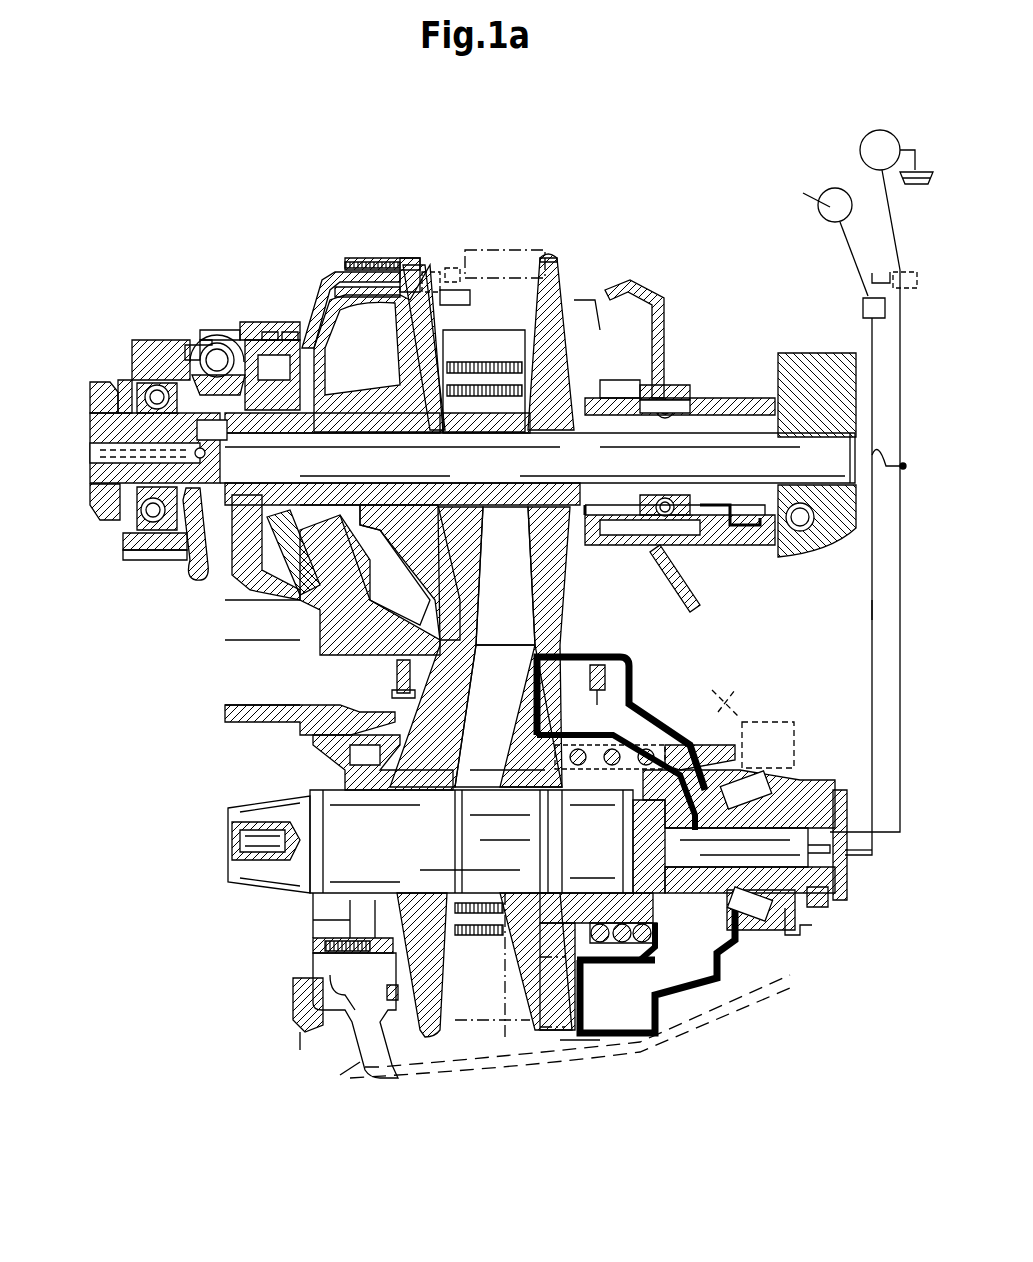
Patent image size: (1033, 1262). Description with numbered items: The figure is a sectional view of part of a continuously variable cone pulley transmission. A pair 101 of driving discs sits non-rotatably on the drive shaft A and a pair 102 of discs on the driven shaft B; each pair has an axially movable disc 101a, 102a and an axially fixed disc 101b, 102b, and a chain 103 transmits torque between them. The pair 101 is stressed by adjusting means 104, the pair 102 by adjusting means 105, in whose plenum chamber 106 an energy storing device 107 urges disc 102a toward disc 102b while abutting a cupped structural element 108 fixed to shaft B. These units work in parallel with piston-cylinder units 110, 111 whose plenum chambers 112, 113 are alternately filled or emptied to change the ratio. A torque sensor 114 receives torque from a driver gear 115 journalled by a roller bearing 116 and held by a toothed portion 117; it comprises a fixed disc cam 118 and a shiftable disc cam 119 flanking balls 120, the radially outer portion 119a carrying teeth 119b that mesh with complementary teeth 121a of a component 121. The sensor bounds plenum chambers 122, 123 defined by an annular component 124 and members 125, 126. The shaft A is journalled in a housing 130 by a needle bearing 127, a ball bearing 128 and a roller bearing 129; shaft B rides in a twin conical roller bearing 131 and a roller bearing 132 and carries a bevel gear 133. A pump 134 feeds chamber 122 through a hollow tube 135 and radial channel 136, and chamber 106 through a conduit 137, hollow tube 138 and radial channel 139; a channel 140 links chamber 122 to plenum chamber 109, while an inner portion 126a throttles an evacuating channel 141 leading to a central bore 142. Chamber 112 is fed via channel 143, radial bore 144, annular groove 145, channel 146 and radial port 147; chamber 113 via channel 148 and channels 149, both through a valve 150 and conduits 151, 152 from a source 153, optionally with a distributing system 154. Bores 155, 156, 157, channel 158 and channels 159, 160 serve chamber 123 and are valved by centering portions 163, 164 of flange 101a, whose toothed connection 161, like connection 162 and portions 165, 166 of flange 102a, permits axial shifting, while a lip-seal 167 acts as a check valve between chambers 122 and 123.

The pair of driving discs 101 is at (485, 625).
The axially movable disc 101a is at (415, 262).
The axially fixed disc 101b is at (550, 262).
The pair of discs 102 is at (490, 1050).
The axially movable disc 102a is at (563, 1040).
The axially fixed disc 102b is at (420, 1047).
The chain or belt 103 is at (463, 915).
The adjusting means 104 is at (327, 640).
The adjusting means 105 is at (623, 727).
The plenum chamber 106 is at (690, 745).
The energy storing device 107 is at (660, 730).
The cupped structural element 108 is at (658, 973).
The plenum chamber 109 is at (407, 653).
The piston-cylinder unit 110 is at (360, 258).
The piston-cylinder unit 111 is at (613, 653).
The plenum chamber 112 is at (432, 272).
The plenum chamber 113 is at (567, 677).
The torque sensor 114 is at (235, 600).
The driver gear 115 is at (147, 342).
The roller bearing 116 is at (132, 342).
The toothed portion 117 is at (175, 540).
The disc cam 118 is at (207, 345).
The disc cam 119 is at (221, 345).
The radially outer portion 119a is at (274, 345).
The teeth 119b is at (272, 650).
The balls 120 is at (213, 345).
The component 121 is at (408, 258).
The complementary teeth 121a is at (284, 345).
The plenum chamber 122 is at (241, 345).
The plenum chamber 123 is at (307, 330).
The annular component 124 is at (352, 262).
The annular structural member 125 is at (257, 345).
The component 126 is at (175, 342).
The inner portion 126a is at (192, 345).
The needle bearing 127 is at (95, 385).
The ball bearing 128 is at (663, 387).
The roller bearing 129 is at (640, 292).
The housing 130 is at (655, 300).
The twin conical roller bearing 131 is at (760, 937).
The roller bearing 132 is at (318, 930).
The bevel gear 133 is at (250, 843).
The pump 134 is at (875, 132).
The hollow tube 135 is at (697, 397).
The radial channel 136 is at (218, 565).
The conduit 137 is at (885, 868).
The hollow tube 138 is at (851, 868).
The radial channel 139 is at (697, 947).
The channel 140 is at (260, 350).
The evacuating channel 141 is at (155, 545).
The central bore 142 is at (150, 480).
The channel 143 is at (605, 520).
The radial bore 144 is at (370, 525).
The annular groove 145 is at (330, 655).
The channel 146 is at (395, 320).
The radial port 147 is at (333, 330).
The channel 148 is at (795, 932).
The radially extending channels 149 is at (793, 750).
The valve 150 is at (868, 303).
The connecting conduit 151 is at (807, 427).
The connecting conduit 152 is at (870, 615).
The source of pressurized fluid 153 is at (833, 188).
The volume- or pressure-distributing system 154 is at (891, 262).
The bore 155 is at (345, 610).
The bore 156 is at (278, 600).
The bore 157 is at (455, 292).
The channel 158 is at (565, 285).
The channel 159 is at (505, 252).
The radial bore 160 is at (465, 385).
The toothed connection 161 is at (520, 565).
The toothed connection 162 is at (525, 735).
The centering portion 163 is at (435, 540).
The centering portion 164 is at (460, 350).
The centering portion 165 is at (520, 778).
The centering portion 166 is at (765, 775).
The lip-seal 167 is at (255, 565).
The drive shaft A is at (185, 605).
The driven shaft B is at (320, 785).